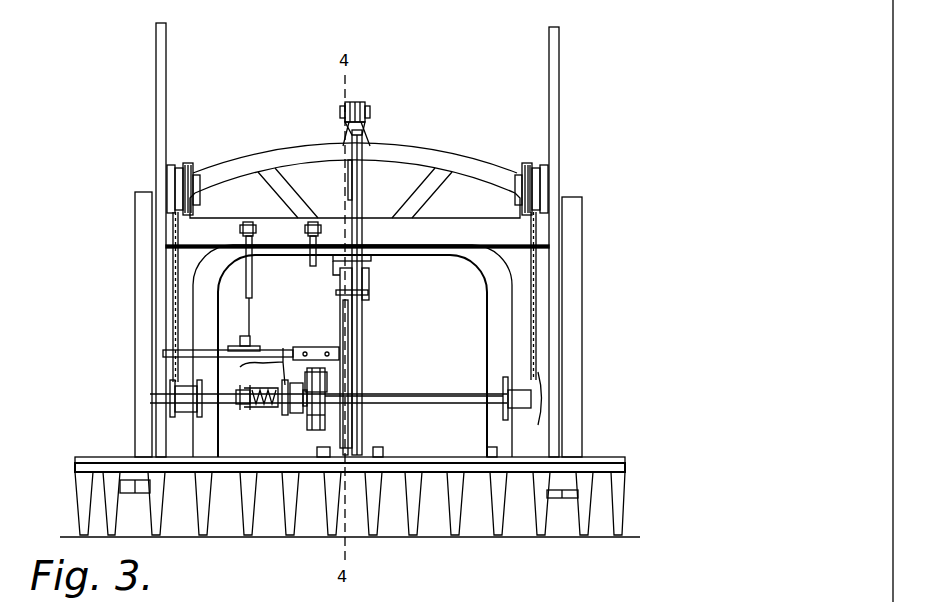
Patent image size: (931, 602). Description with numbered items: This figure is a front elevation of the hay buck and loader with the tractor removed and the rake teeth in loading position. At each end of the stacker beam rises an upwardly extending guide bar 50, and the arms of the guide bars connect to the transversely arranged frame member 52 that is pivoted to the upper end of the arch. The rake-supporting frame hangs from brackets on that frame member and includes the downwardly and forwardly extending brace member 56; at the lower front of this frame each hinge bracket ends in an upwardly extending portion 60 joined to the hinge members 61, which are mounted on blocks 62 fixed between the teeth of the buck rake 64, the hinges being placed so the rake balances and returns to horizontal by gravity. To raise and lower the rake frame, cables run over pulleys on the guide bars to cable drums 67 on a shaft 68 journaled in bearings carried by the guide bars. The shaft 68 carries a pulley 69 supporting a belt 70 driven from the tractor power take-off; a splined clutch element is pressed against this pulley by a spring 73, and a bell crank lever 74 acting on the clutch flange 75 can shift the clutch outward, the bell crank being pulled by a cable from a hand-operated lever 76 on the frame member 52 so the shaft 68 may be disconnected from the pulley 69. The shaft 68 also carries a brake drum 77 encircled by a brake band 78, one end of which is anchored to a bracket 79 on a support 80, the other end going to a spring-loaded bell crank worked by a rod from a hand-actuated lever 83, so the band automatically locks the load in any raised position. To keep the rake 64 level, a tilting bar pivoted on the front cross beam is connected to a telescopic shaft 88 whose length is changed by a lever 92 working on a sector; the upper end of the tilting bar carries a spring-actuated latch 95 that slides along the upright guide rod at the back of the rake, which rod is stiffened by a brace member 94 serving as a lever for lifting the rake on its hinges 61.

The guide bar 50 is at (560, 98).
The frame member 52 is at (468, 166).
The brace member 56 is at (135, 318).
The upwardly extending portion 60 is at (433, 397).
The hinge member 61 is at (569, 498).
The block 62 is at (138, 472).
The buck rake 64 is at (628, 500).
The cable drum 67 is at (548, 185).
The shaft 68 is at (230, 404).
The pulley 69 is at (295, 414).
The belt 70 is at (305, 418).
The spring 73 is at (260, 366).
The bell crank lever 74 is at (262, 348).
The flange 75 is at (249, 318).
The hand-operated lever 76 is at (253, 292).
The brake drum 77 is at (325, 378).
The brake band 78 is at (369, 281).
The bracket 79 is at (350, 330).
The support 80 is at (355, 343).
The hand-actuated lever 83 is at (320, 266).
The telescopic shaft 88 is at (366, 117).
The lever 92 is at (362, 197).
The brace member 94 is at (352, 312).
The spring-actuated latch 95 is at (350, 255).